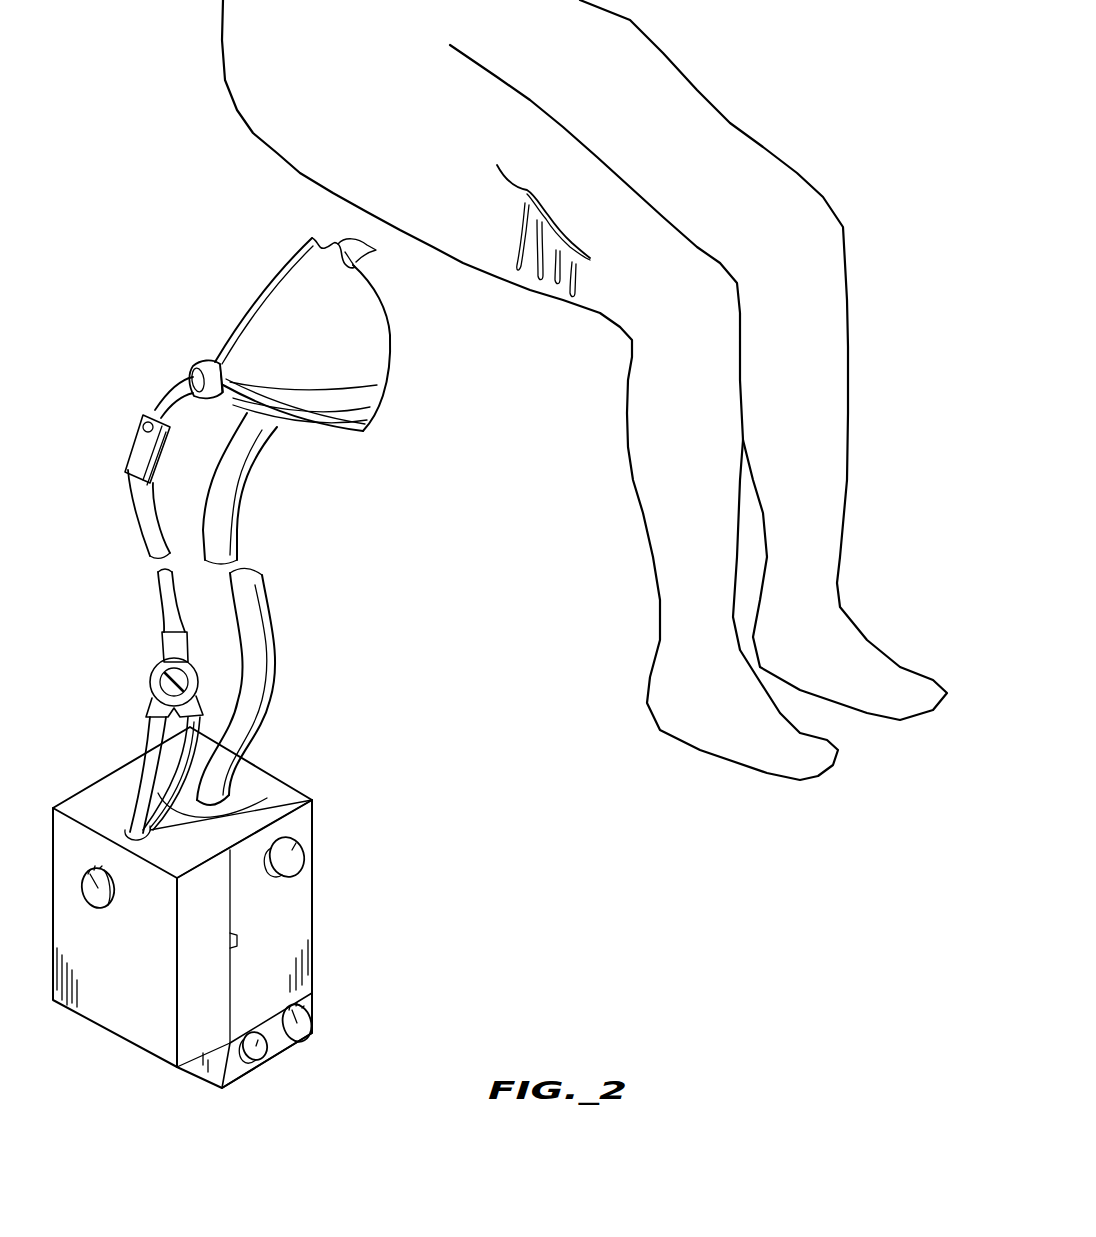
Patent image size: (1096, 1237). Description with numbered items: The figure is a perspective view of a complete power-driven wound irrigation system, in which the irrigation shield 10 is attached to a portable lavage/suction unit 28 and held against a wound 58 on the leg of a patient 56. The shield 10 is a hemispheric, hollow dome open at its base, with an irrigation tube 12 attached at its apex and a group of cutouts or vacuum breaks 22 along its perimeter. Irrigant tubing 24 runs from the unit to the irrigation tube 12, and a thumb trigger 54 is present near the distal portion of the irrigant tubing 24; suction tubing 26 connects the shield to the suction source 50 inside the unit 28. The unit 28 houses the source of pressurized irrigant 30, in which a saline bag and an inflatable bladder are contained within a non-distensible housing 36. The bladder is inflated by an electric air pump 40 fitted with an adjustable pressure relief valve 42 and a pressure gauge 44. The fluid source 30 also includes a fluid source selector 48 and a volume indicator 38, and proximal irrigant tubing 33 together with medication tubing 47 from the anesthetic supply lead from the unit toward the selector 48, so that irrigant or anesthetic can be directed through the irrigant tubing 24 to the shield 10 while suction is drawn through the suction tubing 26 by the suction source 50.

The shield 10 is at (303, 334).
The irrigation tube 12 is at (200, 360).
The vacuum break 22 is at (361, 253).
The irrigant tubing 24 is at (135, 525).
The suction tubing 26 is at (255, 475).
The lavage/suction unit 28 is at (208, 907).
The pressurized irrigant 30 is at (150, 1040).
The proximal irrigant tubing 33 is at (140, 738).
The non-distensible housing 36 is at (105, 790).
The volume indicator 38 is at (106, 906).
The air pump 40 is at (299, 1028).
The pressure relief valve 42 is at (278, 1050).
The pressure gauge 44 is at (315, 1027).
The medication tubing 47 is at (267, 798).
The fluid source selector 48 is at (150, 667).
The suction source 50 is at (305, 830).
The thumb trigger 54 is at (140, 450).
The patient 56 is at (584, 390).
The wound 58 is at (530, 272).